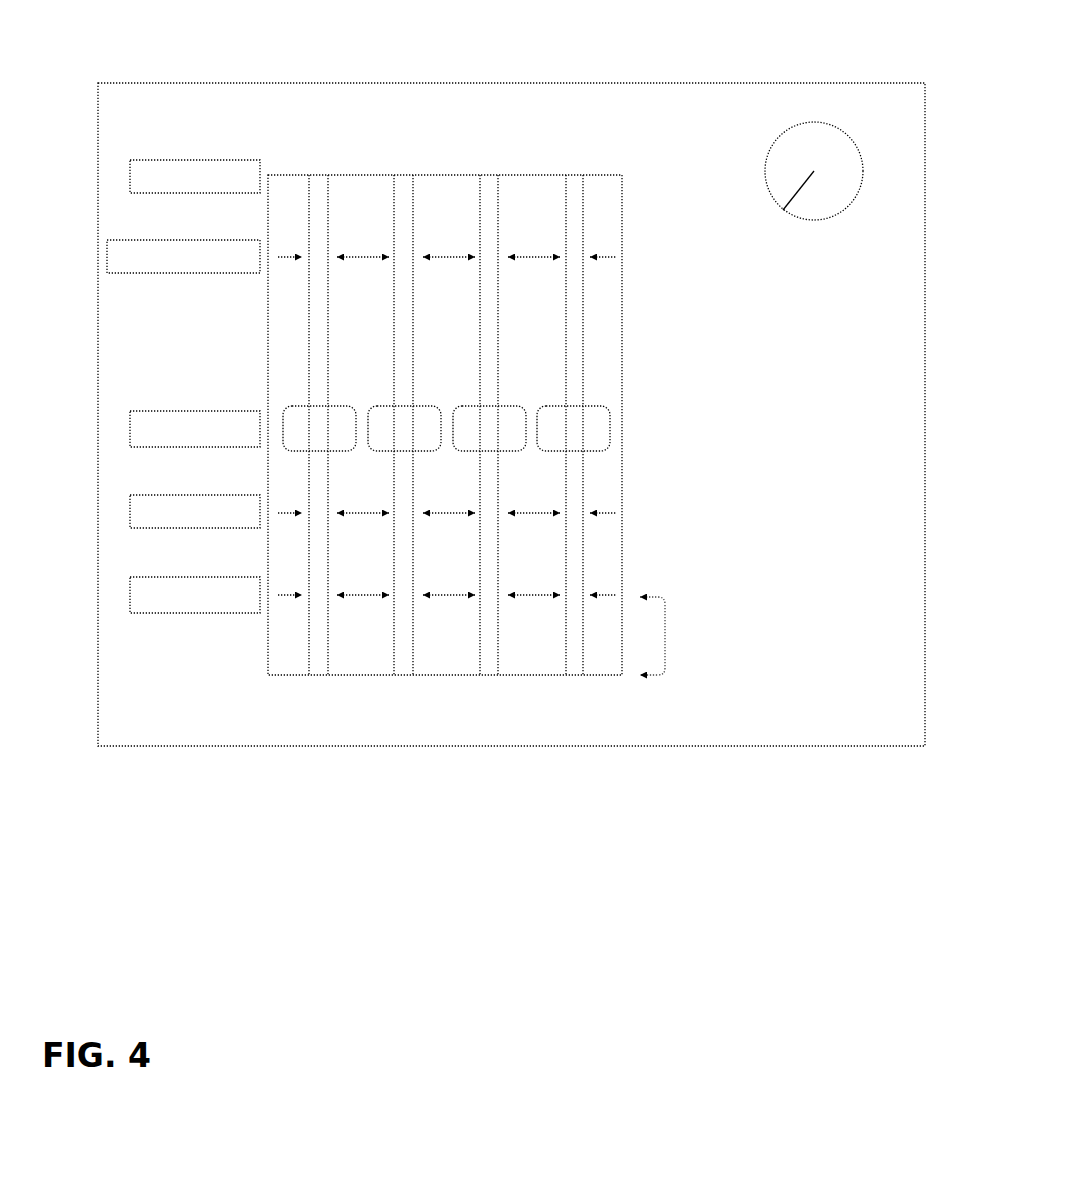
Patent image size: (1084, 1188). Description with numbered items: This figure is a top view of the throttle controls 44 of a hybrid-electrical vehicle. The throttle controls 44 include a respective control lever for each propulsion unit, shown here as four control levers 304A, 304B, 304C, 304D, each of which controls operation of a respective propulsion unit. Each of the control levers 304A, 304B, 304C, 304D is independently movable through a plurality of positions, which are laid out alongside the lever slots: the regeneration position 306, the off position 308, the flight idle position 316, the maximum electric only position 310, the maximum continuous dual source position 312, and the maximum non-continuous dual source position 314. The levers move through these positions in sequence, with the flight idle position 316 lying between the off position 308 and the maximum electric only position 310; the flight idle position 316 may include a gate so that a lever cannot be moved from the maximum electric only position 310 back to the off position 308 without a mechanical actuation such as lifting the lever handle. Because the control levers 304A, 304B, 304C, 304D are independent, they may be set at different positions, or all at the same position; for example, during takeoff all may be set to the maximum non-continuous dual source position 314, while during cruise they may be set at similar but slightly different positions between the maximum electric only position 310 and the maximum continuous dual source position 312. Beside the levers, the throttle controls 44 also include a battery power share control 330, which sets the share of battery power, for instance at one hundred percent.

The throttle controls 44 is at (529, 375).
The control lever 304A is at (319, 428).
The control lever 304B is at (404, 428).
The control lever 304C is at (489, 428).
The control lever 304D is at (573, 428).
The regeneration position 306 is at (676, 636).
The off position 308 is at (622, 596).
The maximum electric only position 310 is at (486, 423).
The maximum continuous dual source position 312 is at (622, 258).
The maximum non-continuous dual source position 314 is at (622, 176).
The flight idle position 316 is at (622, 514).
The battery power share control 330 is at (827, 232).